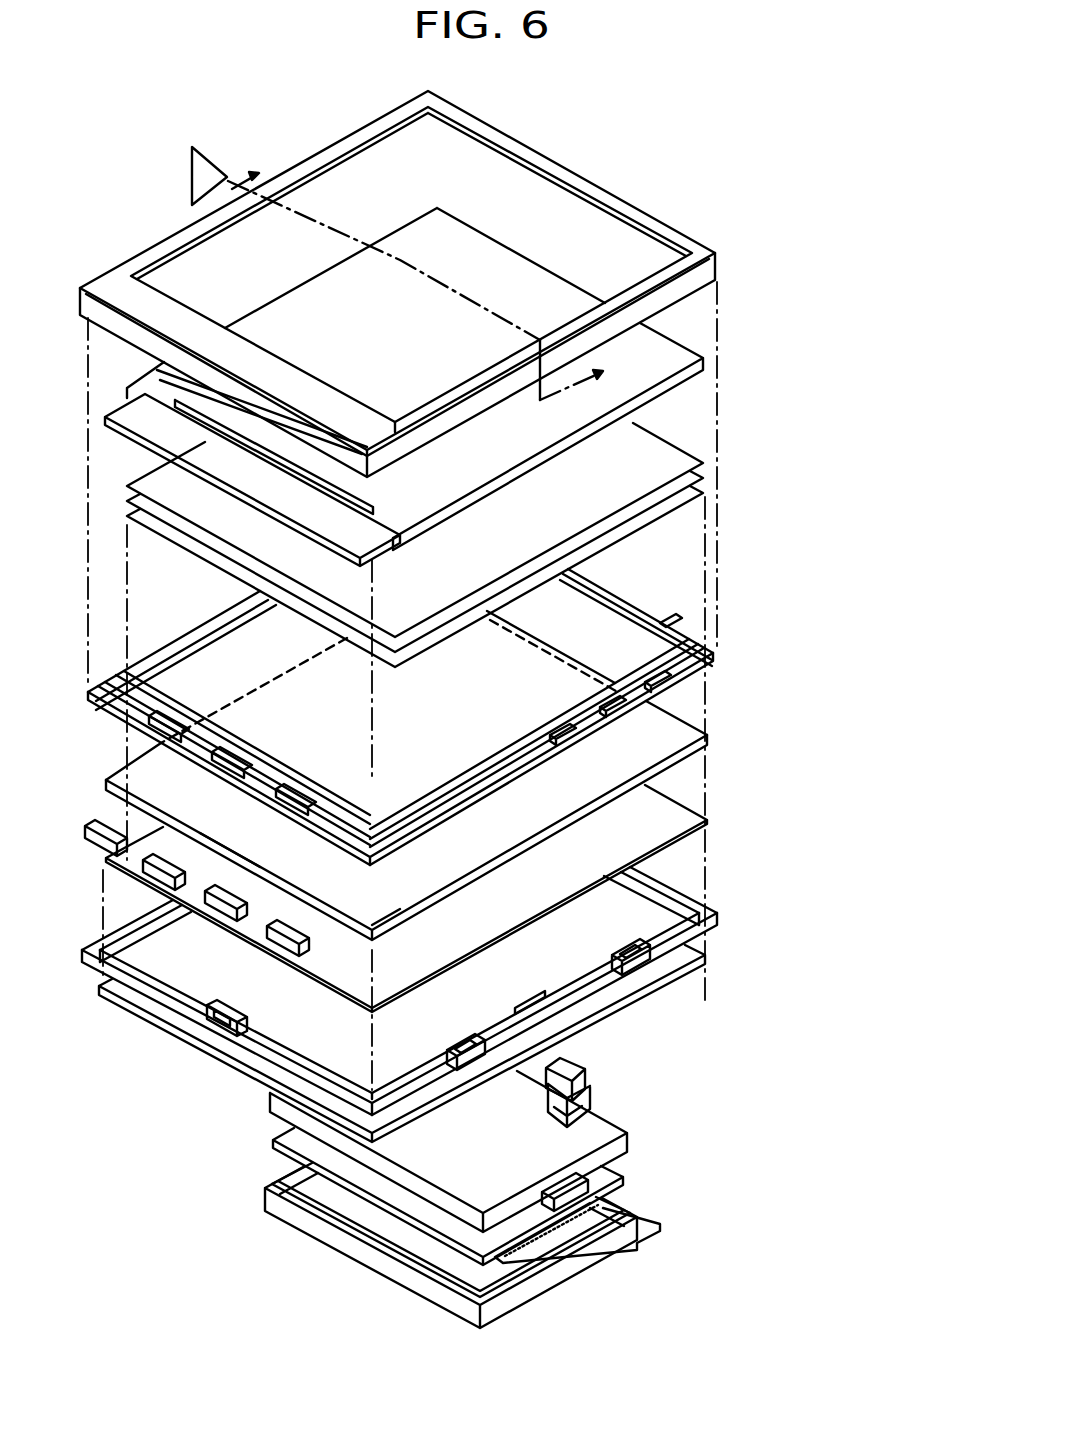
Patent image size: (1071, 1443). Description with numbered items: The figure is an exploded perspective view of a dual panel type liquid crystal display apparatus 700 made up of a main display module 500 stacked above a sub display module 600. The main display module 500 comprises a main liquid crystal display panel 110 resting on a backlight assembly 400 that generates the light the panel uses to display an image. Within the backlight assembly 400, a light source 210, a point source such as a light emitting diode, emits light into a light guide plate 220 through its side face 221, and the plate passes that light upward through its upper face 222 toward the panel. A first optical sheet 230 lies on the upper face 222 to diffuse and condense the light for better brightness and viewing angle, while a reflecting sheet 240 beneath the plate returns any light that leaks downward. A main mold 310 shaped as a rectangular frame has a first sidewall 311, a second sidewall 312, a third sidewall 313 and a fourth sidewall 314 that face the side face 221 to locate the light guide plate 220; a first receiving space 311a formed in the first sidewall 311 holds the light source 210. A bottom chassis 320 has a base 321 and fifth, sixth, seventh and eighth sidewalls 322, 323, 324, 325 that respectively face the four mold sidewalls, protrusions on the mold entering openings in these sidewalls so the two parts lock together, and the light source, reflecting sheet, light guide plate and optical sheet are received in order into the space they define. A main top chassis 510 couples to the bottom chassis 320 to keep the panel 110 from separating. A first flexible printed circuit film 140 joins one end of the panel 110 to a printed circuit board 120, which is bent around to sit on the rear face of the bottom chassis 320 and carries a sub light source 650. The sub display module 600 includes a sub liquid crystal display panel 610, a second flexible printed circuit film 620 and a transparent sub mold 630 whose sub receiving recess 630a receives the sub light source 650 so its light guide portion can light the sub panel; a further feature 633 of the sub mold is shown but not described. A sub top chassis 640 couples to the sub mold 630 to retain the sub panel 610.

The main liquid crystal display panel 110 is at (502, 262).
The printed circuit board 120 is at (207, 1073).
The first flexible printed circuit film 140 is at (105, 410).
The light source 210 is at (292, 948).
The light guide plate 220 is at (686, 714).
The side face 221 is at (286, 893).
The upper face 222 is at (421, 870).
The first optical sheet 230 is at (708, 498).
The reflecting sheet 240 is at (686, 826).
The main mold 310 is at (679, 633).
The first sidewall 311 is at (290, 773).
The first receiving space 311a is at (263, 787).
The second sidewall 312 is at (604, 613).
The third sidewall 313 is at (553, 744).
The fourth sidewall 314 is at (252, 623).
The bottom chassis 320 is at (692, 976).
The base 321 is at (604, 958).
The fifth sidewall 322 is at (283, 1070).
The sixth sidewall 323 is at (692, 896).
The seventh sidewall 324 is at (553, 938).
The eighth sidewall 325 is at (132, 922).
The backlight assembly 400 is at (768, 1030).
The main display module 500 is at (816, 1040).
The main top chassis 510 is at (642, 215).
The sub display module 600 is at (724, 1148).
The sub liquid crystal display panel 610 is at (615, 1178).
The second flexible printed circuit film 620 is at (624, 1205).
The sub mold 630 is at (612, 1146).
The sub receiving recess 630a is at (599, 1101).
The battery connector 633 is at (578, 1177).
The sub top chassis 640 is at (612, 1250).
The sub light source 650 is at (591, 1067).
The dual panel type liquid crystal display apparatus 700 is at (312, 112).